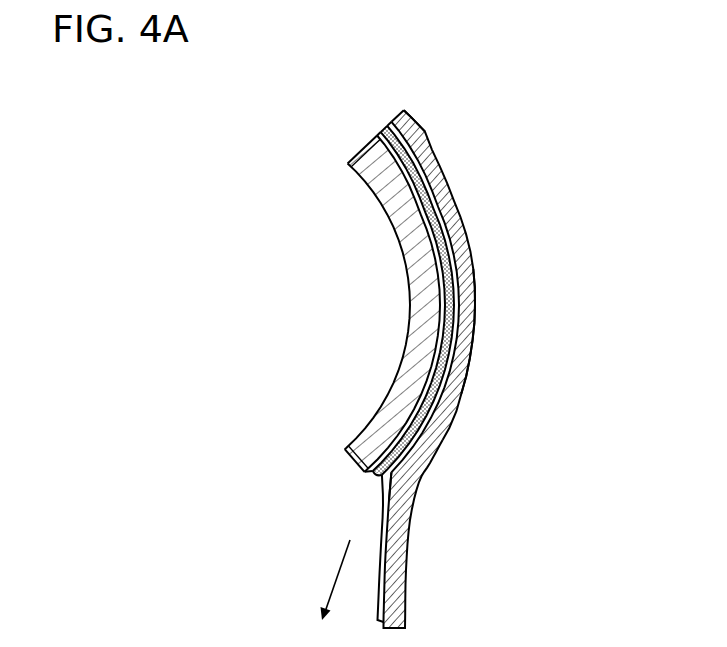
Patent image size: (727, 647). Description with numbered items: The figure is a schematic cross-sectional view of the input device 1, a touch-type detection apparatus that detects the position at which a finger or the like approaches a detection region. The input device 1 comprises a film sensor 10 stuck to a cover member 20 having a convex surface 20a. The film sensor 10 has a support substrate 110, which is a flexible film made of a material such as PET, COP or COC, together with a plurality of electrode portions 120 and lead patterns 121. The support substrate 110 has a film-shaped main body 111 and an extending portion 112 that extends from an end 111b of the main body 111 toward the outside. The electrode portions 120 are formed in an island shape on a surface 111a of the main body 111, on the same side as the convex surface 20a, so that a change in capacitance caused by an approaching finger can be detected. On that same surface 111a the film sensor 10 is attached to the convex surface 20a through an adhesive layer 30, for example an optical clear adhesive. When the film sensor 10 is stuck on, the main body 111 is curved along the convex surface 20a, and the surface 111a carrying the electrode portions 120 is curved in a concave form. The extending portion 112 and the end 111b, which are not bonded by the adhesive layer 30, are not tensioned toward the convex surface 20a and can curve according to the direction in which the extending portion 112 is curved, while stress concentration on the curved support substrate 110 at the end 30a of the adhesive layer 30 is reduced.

The input device 1 is at (557, 116).
The film sensor 10 is at (387, 121).
The cover member 20 is at (351, 155).
The convex surface 20a is at (412, 130).
The adhesive layer 30 is at (373, 306).
The end of the adhesive layer 30a is at (378, 477).
The support substrate 110 is at (482, 356).
The main body 111 is at (486, 261).
The surface of the main body 111a is at (454, 361).
The end of the main body 111b is at (402, 498).
The extending portion 112 is at (448, 534).
The electrode portions 120 is at (440, 168).
The lead patterns 121 is at (387, 572).